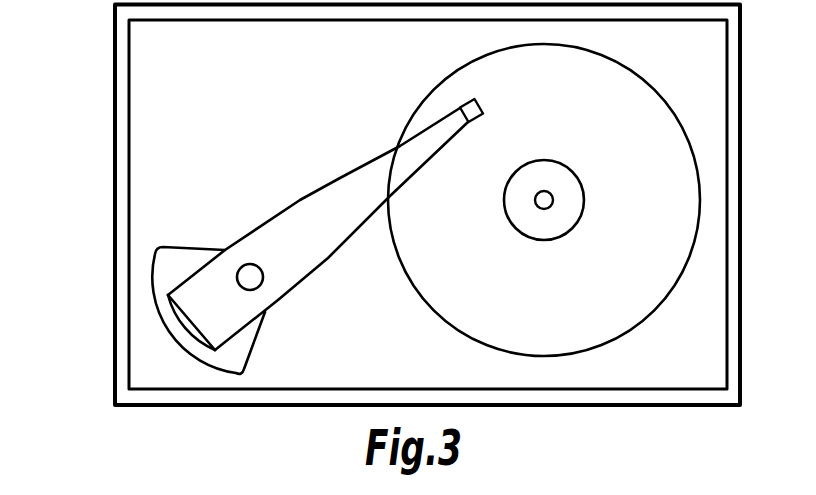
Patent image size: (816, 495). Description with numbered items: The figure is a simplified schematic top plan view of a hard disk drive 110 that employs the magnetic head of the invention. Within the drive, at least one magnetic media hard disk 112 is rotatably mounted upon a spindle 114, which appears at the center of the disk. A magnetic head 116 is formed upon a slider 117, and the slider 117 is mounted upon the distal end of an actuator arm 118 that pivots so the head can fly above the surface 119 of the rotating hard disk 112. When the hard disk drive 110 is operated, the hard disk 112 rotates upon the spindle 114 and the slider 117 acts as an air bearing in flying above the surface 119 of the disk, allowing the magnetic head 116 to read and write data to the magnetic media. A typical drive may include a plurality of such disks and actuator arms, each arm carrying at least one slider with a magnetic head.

The hard disk drive 110 is at (115, 130).
The hard disk 112 is at (458, 328).
The spindle 114 is at (575, 183).
The magnetic head 116 is at (479, 104).
The slider 117 is at (473, 118).
The actuator arm 118 is at (282, 210).
The surface 119 is at (418, 258).